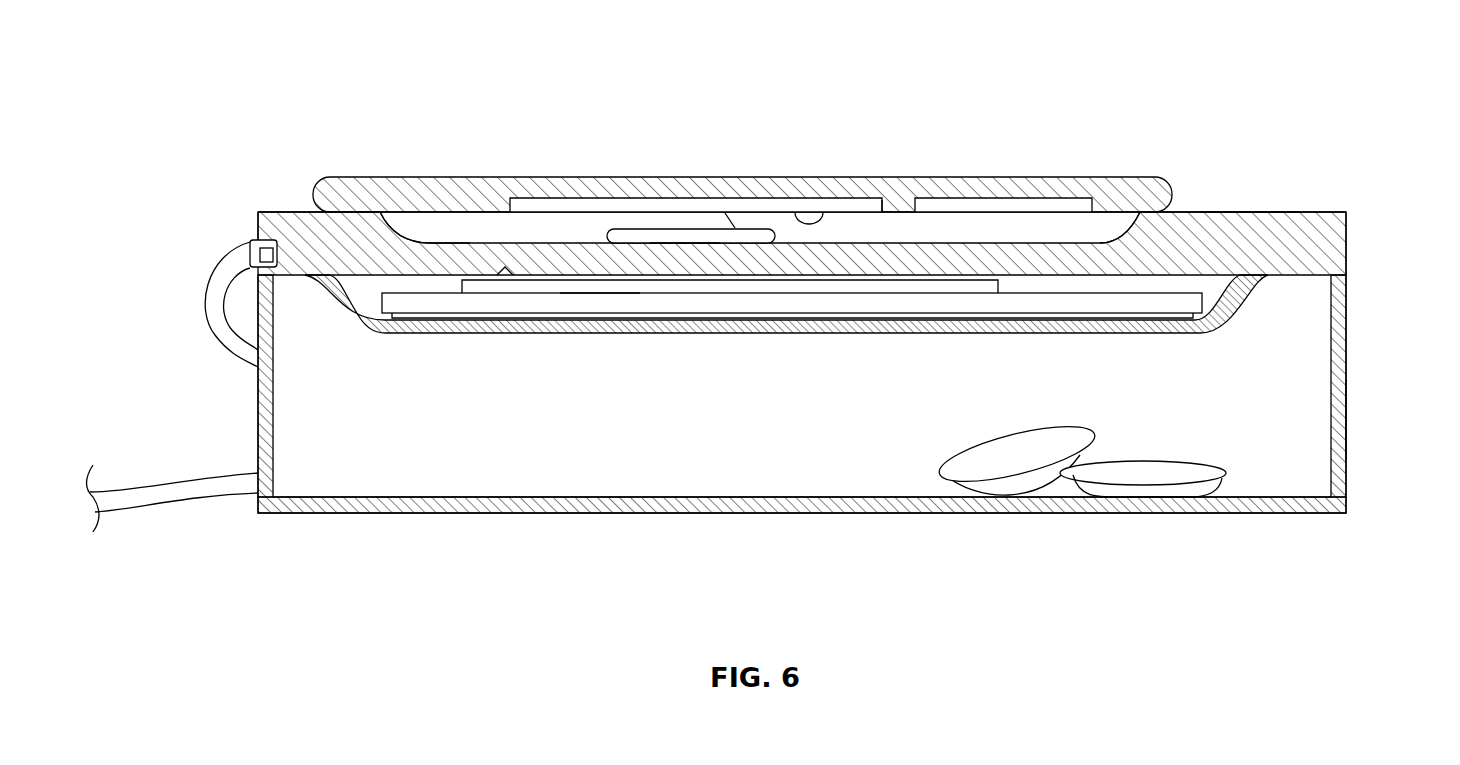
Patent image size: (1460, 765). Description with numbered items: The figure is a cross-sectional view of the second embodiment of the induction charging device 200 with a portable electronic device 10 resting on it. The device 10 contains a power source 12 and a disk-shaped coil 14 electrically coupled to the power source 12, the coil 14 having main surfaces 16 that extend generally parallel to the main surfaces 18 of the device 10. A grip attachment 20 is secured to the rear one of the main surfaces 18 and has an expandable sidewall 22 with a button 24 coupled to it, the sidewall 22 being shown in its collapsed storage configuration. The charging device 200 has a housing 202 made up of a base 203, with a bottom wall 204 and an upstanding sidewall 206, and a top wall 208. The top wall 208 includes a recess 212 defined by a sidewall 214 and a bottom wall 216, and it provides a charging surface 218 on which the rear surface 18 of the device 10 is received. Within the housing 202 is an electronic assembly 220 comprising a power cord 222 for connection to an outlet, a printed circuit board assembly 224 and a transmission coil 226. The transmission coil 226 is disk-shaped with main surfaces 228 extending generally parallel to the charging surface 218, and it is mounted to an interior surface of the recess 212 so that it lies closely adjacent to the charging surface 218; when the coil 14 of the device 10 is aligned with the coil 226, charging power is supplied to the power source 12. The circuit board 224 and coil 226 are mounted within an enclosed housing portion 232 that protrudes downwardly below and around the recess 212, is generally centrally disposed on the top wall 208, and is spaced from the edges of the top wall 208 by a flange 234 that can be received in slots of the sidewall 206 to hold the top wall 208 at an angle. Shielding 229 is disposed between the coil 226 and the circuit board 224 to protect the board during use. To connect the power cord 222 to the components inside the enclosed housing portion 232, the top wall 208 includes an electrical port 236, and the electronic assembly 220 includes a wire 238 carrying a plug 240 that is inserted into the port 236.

The induction charging device 200 is at (1307, 96).
The portable electronic device 10 is at (370, 177).
The power source 12 is at (1000, 205).
The coil 14 is at (855, 207).
The main surfaces 16 is at (826, 212).
The main surfaces 18 is at (535, 177).
The grip attachment 20 is at (640, 228).
The expandable sidewall 22 is at (680, 222).
The button 24 is at (755, 238).
The housing 202 is at (1262, 513).
The base 203 is at (1348, 420).
The bottom wall 204 is at (950, 512).
The sidewall 206 is at (1338, 345).
The top wall 208 is at (1350, 222).
The recess 212 is at (1110, 232).
The sidewall 214 is at (393, 228).
The bottom wall 216 is at (445, 243).
The charging surface 218 is at (1243, 212).
The electronic assembly 220 is at (340, 384).
The power cord 222 is at (148, 503).
The printed circuit board assembly 224 is at (750, 313).
The transmission coil 226 is at (616, 460).
The main surfaces 228 is at (497, 280).
The shielding 229 is at (875, 303).
The enclosed housing portion 232 is at (1183, 333).
The flange 234 is at (1338, 262).
The electrical port 236 is at (260, 240).
The wire 238 is at (212, 322).
The plug 240 is at (250, 248).